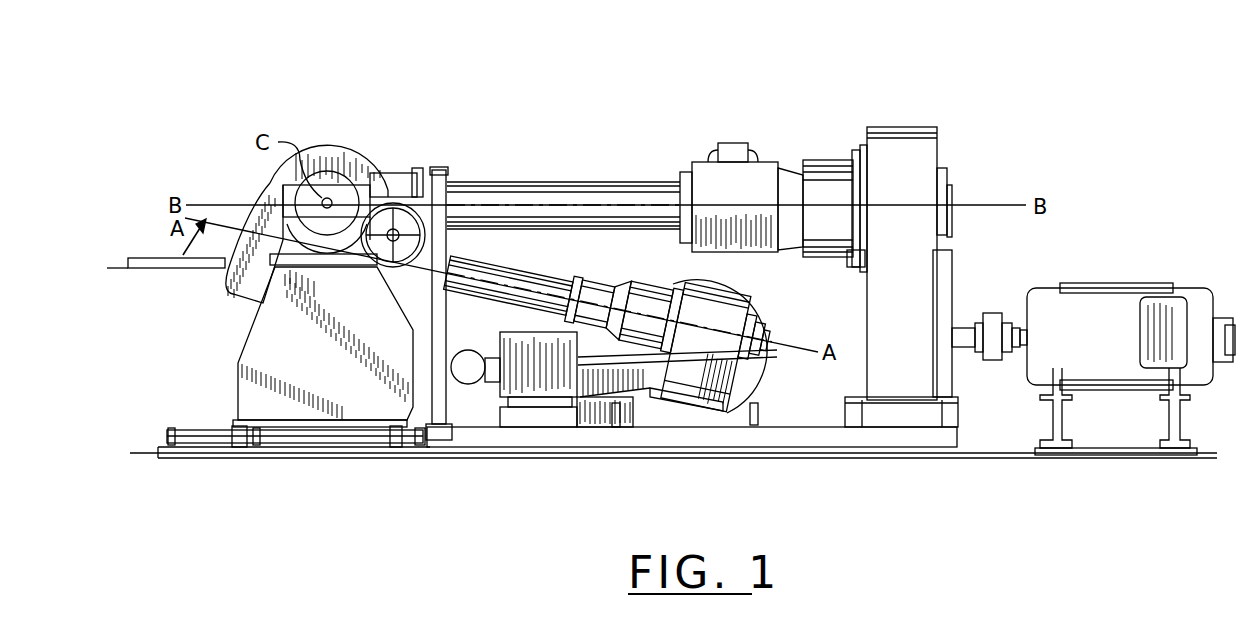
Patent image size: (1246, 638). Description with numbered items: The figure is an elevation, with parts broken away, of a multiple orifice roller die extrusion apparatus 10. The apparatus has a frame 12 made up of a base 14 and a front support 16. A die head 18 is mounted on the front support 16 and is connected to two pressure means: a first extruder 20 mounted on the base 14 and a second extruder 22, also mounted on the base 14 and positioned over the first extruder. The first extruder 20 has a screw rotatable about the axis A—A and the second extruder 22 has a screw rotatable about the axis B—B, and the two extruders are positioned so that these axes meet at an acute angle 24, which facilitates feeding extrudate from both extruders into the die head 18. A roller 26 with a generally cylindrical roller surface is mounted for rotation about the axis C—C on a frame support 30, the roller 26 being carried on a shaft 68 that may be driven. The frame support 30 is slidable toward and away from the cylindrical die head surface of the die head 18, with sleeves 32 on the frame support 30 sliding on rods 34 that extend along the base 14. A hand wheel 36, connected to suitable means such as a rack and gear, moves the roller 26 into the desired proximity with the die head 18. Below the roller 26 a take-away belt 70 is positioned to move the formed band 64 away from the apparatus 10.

The multiple orifice roller die extrusion apparatus 10 is at (908, 62).
The frame 12 is at (440, 443).
The base 14 is at (787, 437).
The front support 16 is at (445, 200).
The die head 18 is at (395, 187).
The first extruder 20 is at (533, 290).
The second extruder 22 is at (641, 185).
The acute angle 24 is at (203, 192).
The roller 26 is at (345, 180).
The frame support 30 is at (262, 346).
The sleeves 32 is at (240, 442).
The rods 34 is at (207, 437).
The hand wheel 36 is at (427, 240).
The formed band 64 is at (165, 259).
The shaft 68 is at (330, 198).
The take-away belt 70 is at (107, 268).